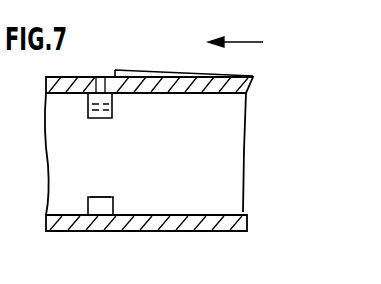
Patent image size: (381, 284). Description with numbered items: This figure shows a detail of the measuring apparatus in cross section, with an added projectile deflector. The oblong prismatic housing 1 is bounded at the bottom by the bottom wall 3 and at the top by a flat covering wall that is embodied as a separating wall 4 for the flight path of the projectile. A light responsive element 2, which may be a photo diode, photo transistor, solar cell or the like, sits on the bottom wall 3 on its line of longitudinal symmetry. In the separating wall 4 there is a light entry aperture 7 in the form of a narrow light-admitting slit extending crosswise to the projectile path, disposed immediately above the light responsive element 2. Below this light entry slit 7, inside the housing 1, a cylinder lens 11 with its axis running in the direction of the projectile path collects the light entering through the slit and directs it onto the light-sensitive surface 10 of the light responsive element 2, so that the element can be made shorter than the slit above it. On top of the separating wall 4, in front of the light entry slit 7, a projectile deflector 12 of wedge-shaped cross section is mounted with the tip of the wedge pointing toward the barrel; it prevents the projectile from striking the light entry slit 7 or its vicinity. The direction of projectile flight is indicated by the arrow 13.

The housing 1 is at (245, 182).
The light responsive element 2 is at (105, 204).
The bottom wall 3 is at (205, 222).
The separating wall 4 is at (241, 88).
The light entry aperture 7 is at (100, 77).
The light-sensitive surface 10 is at (97, 197).
The cylinder lens 11 is at (112, 107).
The projectile deflector 12 is at (129, 71).
The arrow 13 is at (247, 42).